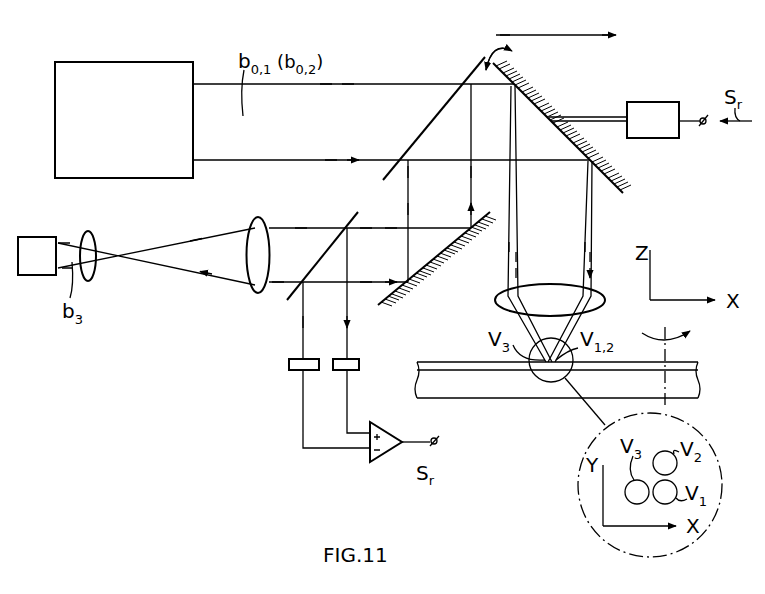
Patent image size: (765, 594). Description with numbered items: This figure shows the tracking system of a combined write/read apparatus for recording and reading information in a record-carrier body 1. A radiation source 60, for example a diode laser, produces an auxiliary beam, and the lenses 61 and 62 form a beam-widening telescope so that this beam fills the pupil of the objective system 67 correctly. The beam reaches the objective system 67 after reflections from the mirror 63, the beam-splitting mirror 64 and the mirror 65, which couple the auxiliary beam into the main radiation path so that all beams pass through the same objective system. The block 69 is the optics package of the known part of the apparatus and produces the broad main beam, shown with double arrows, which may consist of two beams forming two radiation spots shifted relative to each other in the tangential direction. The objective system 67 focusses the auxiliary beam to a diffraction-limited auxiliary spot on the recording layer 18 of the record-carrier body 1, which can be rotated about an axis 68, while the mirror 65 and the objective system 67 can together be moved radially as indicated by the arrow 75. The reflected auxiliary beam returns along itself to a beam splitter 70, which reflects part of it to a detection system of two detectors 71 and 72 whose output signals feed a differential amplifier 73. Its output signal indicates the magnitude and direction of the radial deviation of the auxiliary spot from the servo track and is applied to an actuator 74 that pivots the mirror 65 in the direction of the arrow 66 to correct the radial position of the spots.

The record-carrier body 1 is at (634, 348).
The recording layer 18 is at (430, 362).
The radiation source 60 is at (45, 236).
The lens 61 is at (95, 240).
The lens 62 is at (252, 292).
The mirror 63 is at (437, 262).
The beam-splitting mirror 64 is at (476, 67).
The mirror 65 is at (542, 100).
The arrow 66 is at (518, 50).
The objective system 67 is at (603, 307).
The axis 68 is at (680, 364).
The block 69 is at (164, 180).
The beam splitter 70 is at (290, 297).
The detector 71 is at (293, 359).
The detector 72 is at (357, 359).
The differential amplifier 73 is at (384, 425).
The actuator 74 is at (632, 103).
The arrow 75 is at (535, 40).